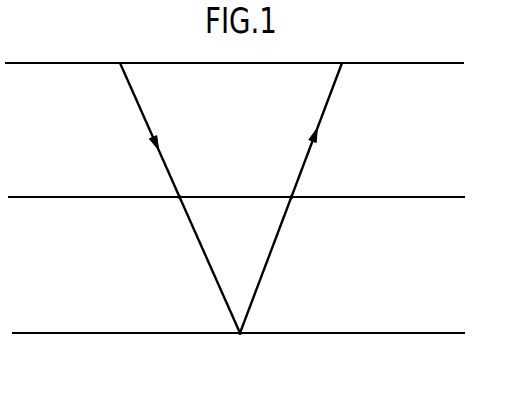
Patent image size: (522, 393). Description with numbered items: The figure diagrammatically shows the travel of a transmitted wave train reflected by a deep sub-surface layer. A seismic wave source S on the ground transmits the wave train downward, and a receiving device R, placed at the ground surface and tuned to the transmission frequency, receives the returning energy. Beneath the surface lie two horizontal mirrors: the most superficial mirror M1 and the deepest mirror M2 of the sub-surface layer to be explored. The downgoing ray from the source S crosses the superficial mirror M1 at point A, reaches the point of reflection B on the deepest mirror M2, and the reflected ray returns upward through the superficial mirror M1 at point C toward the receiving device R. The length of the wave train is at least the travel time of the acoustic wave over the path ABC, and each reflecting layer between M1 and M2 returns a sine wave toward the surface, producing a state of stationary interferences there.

The seismic wave source S is at (175, 186).
The receiving device R is at (293, 186).
The point A of path ABC A is at (187, 190).
The point of reflection B is at (242, 342).
The point C of path ABC C is at (286, 190).
The most superficial mirror M1 is at (253, 198).
The deepest mirror M2 is at (254, 334).